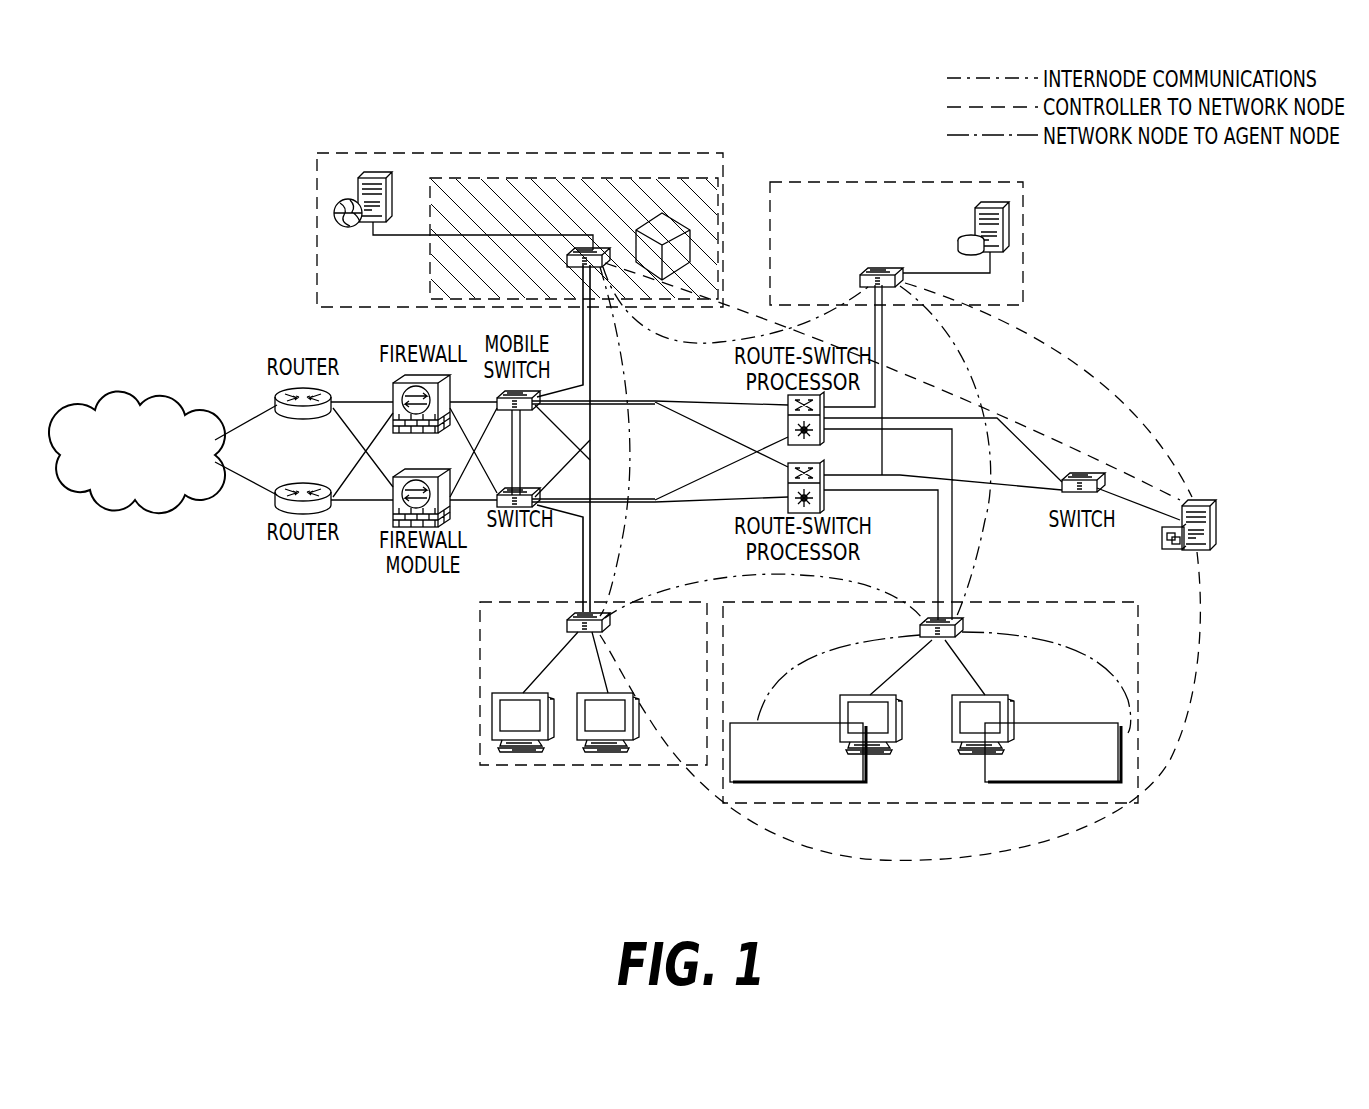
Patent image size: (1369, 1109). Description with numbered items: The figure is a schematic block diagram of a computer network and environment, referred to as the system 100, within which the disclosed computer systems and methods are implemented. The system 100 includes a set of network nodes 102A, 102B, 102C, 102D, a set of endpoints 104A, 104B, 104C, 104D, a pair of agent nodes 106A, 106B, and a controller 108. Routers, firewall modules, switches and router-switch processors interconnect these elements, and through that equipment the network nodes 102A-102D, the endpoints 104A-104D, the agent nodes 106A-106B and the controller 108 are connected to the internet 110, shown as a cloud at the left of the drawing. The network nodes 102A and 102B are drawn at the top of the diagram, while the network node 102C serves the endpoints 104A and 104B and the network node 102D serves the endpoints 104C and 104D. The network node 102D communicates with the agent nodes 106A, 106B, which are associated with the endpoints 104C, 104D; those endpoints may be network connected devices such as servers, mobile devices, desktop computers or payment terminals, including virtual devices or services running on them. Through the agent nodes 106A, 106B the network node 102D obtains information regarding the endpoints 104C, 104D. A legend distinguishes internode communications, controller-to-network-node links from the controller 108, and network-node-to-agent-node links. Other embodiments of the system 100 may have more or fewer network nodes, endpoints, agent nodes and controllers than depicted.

The system 100 is at (216, 232).
The network node 102A is at (567, 264).
The network node 102B is at (860, 280).
The network node 102C is at (533, 711).
The network node 102D is at (930, 751).
The endpoint 104A is at (517, 752).
The endpoint 104B is at (597, 752).
The endpoint 104C is at (880, 754).
The endpoint 104D is at (975, 754).
The agent node 106A is at (793, 784).
The agent node 106B is at (1100, 784).
The controller 108 is at (1210, 548).
The internet 110 is at (118, 508).